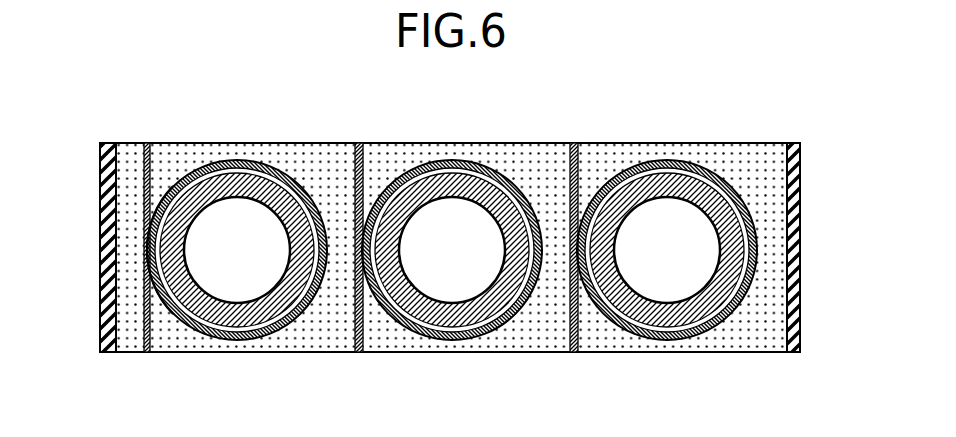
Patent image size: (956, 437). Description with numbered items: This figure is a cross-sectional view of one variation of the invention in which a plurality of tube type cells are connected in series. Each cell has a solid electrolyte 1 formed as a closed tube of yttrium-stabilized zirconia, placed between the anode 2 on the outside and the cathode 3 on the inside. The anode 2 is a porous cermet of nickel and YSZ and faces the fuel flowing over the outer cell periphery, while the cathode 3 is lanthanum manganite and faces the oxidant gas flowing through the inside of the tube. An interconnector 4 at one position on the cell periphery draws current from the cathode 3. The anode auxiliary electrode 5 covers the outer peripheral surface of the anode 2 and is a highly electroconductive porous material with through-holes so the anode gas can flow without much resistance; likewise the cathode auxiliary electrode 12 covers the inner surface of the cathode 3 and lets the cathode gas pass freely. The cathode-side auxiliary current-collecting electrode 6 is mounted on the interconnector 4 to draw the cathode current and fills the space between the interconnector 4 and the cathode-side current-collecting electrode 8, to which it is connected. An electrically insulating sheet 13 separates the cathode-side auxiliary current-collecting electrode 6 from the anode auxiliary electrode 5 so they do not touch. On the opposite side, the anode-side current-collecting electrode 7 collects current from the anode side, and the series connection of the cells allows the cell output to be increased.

The solid electrolyte 1 is at (257, 170).
The anode 2 is at (293, 175).
The cathode 3 is at (207, 188).
The interconnector 4 is at (146, 243).
The anode auxiliary electrode 5 is at (320, 343).
The cathode-side auxiliary current-collecting electrode 6 is at (126, 344).
The anode-side current-collecting electrode 7 is at (798, 252).
The cathode-side current-collecting electrode 8 is at (107, 262).
The cathode auxiliary electrode 12 is at (233, 287).
The electrically insulating sheet 13 is at (155, 343).